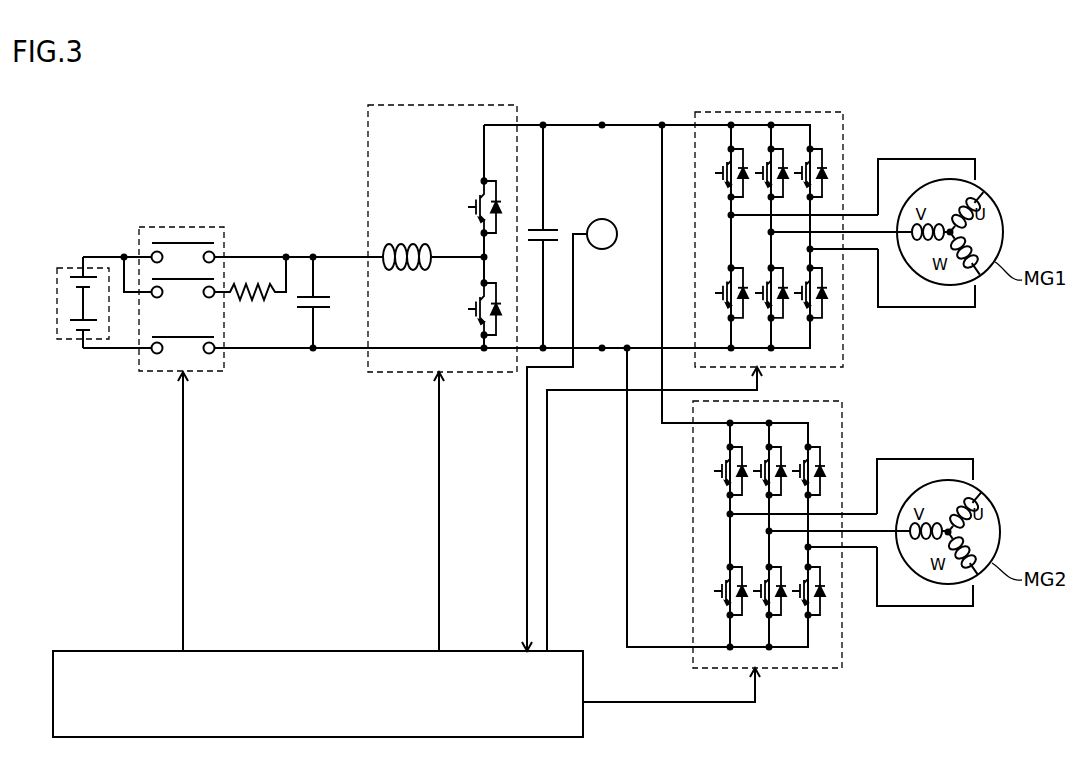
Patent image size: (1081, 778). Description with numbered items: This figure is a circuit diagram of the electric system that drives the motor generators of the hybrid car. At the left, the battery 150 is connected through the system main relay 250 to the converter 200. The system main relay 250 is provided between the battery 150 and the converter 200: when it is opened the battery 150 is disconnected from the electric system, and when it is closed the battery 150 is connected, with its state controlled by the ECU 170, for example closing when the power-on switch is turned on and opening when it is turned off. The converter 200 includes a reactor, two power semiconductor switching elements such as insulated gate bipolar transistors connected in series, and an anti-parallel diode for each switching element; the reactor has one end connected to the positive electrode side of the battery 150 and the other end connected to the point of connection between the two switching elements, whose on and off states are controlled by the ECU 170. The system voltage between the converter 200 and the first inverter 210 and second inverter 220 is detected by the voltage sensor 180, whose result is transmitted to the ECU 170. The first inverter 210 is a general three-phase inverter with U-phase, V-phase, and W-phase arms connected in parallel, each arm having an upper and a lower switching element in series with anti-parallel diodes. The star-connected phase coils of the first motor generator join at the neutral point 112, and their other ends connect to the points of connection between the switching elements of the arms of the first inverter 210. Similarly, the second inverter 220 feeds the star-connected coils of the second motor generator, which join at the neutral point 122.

The battery 150 is at (68, 266).
The SMR (System Main Relay) 250 is at (183, 225).
The converter 200 is at (443, 103).
The voltage sensor 180 is at (613, 246).
The first inverter 210 is at (843, 347).
The second inverter 220 is at (842, 647).
The neutral point 112 is at (950, 230).
The neutral point 122 is at (948, 530).
The ECU 170 is at (318, 650).